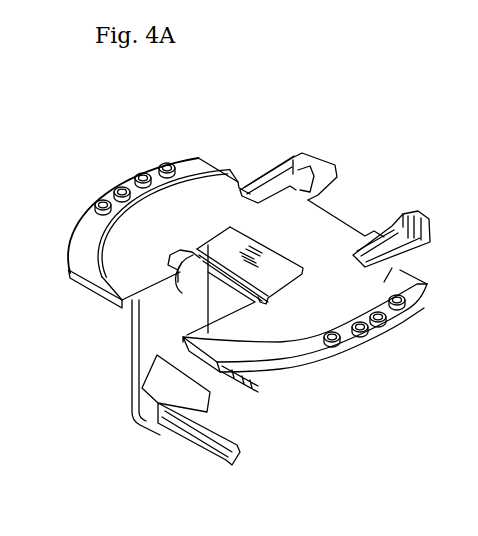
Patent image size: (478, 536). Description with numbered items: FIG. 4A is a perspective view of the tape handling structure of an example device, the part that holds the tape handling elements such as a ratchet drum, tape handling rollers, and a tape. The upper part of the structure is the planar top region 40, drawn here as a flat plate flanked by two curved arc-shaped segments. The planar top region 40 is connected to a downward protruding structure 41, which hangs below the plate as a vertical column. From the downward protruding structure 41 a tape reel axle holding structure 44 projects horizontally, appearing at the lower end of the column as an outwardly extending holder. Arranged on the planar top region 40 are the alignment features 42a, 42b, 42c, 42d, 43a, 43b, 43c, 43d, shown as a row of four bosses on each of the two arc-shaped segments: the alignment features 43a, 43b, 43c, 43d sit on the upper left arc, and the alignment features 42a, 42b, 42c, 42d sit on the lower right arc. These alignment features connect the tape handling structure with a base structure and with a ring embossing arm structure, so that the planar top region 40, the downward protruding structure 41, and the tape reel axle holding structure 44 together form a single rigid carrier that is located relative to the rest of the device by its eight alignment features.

The planar top region 40 is at (210, 203).
The downward protruding structure 41 is at (165, 312).
The alignment feature 42a is at (405, 306).
The alignment feature 42b is at (392, 332).
The alignment feature 42c is at (368, 355).
The alignment feature 42d is at (340, 367).
The alignment feature 43a is at (163, 152).
The alignment feature 43b is at (137, 172).
The alignment feature 43c is at (104, 190).
The alignment feature 43d is at (98, 206).
The tape reel axle holding structure 44 is at (175, 397).